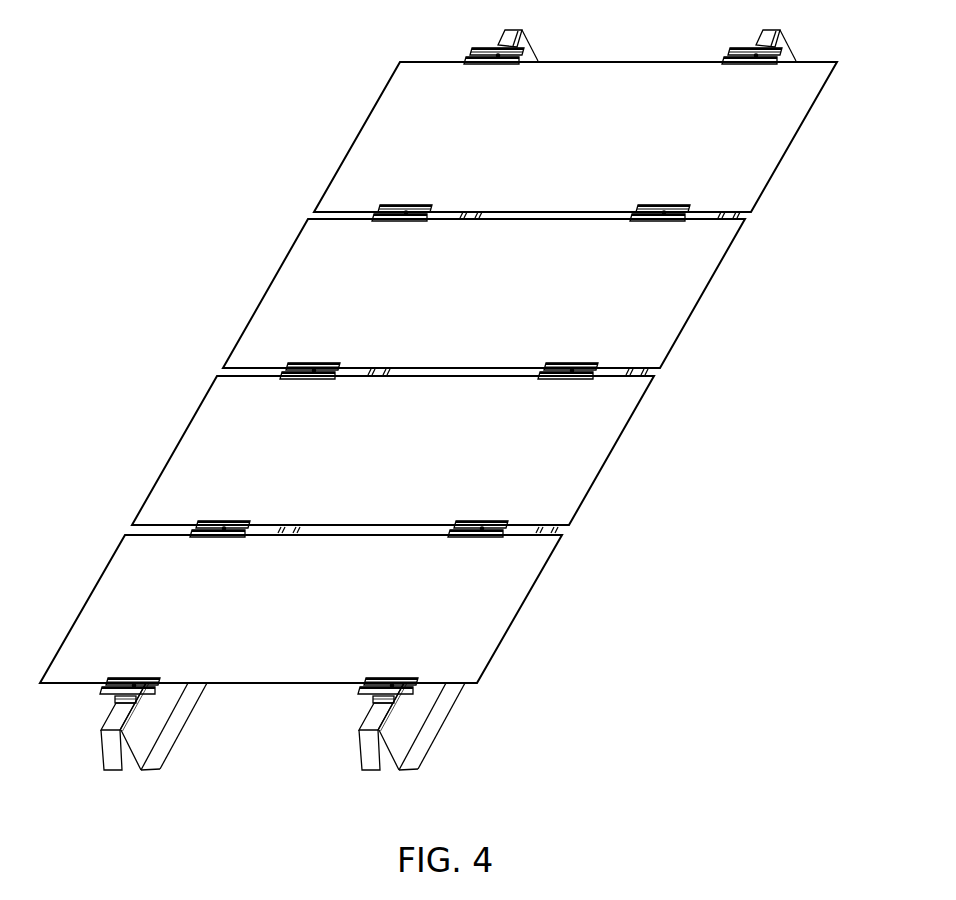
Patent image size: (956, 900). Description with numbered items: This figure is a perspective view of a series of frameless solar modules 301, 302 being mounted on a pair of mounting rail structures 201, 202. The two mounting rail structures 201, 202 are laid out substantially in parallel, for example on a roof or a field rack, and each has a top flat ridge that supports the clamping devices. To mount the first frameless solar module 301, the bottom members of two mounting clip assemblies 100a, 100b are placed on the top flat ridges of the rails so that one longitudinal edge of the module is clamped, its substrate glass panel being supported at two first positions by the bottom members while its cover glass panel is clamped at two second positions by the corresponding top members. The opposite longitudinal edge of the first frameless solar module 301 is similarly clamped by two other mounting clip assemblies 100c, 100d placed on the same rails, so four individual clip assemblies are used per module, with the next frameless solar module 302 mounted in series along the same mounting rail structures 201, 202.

The mounting clip assembly 100a is at (417, 688).
The mounting clip assembly 100b is at (147, 680).
The mounting clip assembly 100c is at (485, 533).
The mounting clip assembly 100d is at (223, 520).
The mounting rail structure 201 is at (405, 727).
The mounting rail structure 202 is at (137, 717).
The first frameless solar module 301 is at (520, 610).
The frameless solar module 302 is at (598, 462).